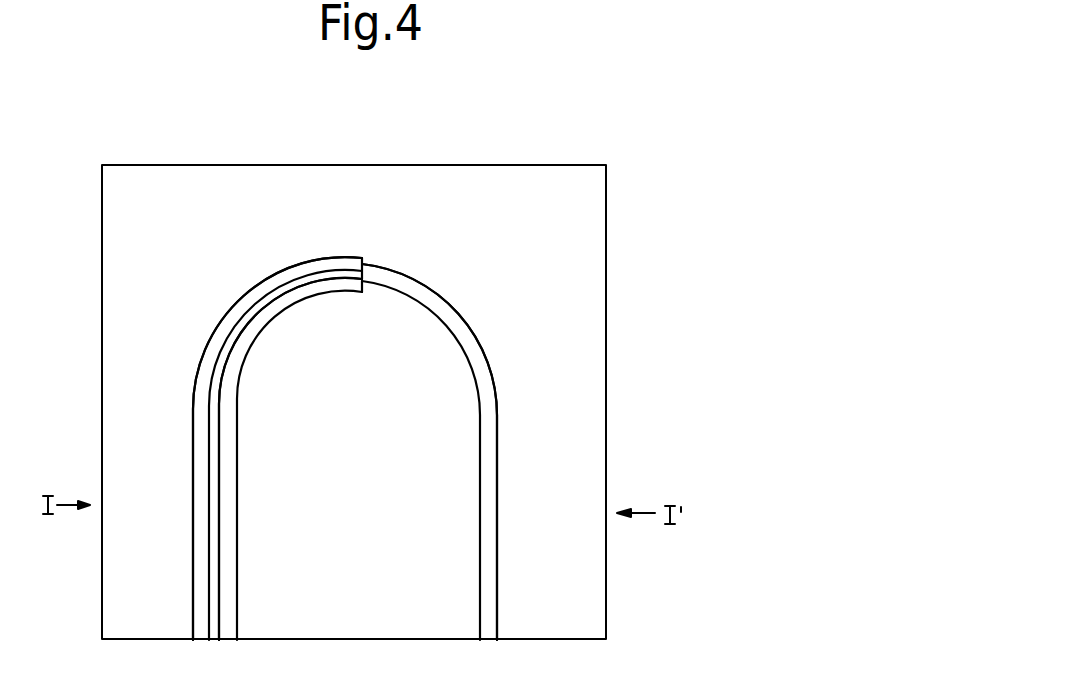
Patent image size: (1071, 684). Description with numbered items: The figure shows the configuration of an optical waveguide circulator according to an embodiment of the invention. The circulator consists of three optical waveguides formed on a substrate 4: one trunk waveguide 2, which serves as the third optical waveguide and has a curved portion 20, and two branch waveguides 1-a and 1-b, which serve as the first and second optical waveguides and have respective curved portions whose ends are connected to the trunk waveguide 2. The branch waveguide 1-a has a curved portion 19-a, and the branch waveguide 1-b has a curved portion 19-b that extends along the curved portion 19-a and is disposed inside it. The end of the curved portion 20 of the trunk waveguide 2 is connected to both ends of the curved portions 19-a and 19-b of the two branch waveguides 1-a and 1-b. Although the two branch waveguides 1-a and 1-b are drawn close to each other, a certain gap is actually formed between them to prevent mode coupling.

The substrate 4 is at (138, 186).
The branch waveguide 1-a is at (302, 268).
The branch waveguide 1-b is at (230, 476).
The curved portion 19-a is at (222, 332).
The curved portion 19-b is at (262, 325).
The trunk waveguide 2 is at (490, 392).
The curved portion 20 is at (450, 303).